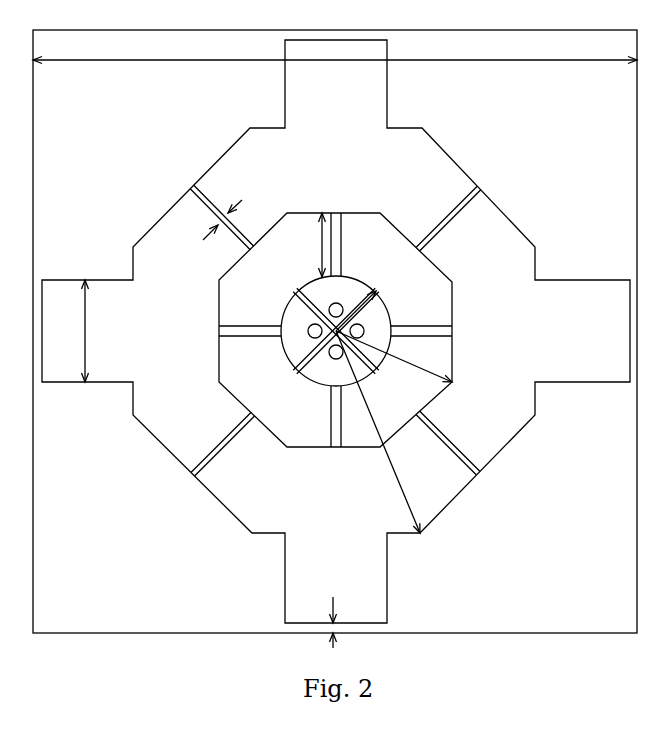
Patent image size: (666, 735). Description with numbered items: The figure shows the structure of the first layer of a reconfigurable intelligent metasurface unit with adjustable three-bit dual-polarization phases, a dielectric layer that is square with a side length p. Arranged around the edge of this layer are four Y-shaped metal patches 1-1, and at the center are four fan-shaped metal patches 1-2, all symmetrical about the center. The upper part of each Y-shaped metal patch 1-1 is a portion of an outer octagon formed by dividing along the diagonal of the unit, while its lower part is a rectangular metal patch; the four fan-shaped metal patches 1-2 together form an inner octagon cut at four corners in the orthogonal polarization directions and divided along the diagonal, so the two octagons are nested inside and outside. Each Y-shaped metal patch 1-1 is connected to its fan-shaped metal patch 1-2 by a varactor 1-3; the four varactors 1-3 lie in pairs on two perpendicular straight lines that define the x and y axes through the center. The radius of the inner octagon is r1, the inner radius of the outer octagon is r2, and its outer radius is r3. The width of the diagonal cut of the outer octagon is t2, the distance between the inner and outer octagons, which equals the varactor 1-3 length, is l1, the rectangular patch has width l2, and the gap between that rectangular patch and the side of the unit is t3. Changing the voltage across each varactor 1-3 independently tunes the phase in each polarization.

The Y-shaped metal patch 1-1 is at (509, 218).
The fan-shaped metal patch 1-2 is at (284, 361).
The varactor 1-3 is at (341, 247).
The side length of the unit p is at (335, 75).
The distance between inner and outer octagons l1 is at (307, 245).
The width of the rectangular metal patch l2 is at (97, 331).
The width of the diagonal of the outer octagon t2 is at (213, 215).
The distance between the rectangular metal patch and the side of the unit t3 is at (351, 622).
The radius of the inner octagon r1 is at (367, 311).
The inner radius of the outer octagon r2 is at (394, 368).
The outer radius of the outer octagon r3 is at (378, 432).